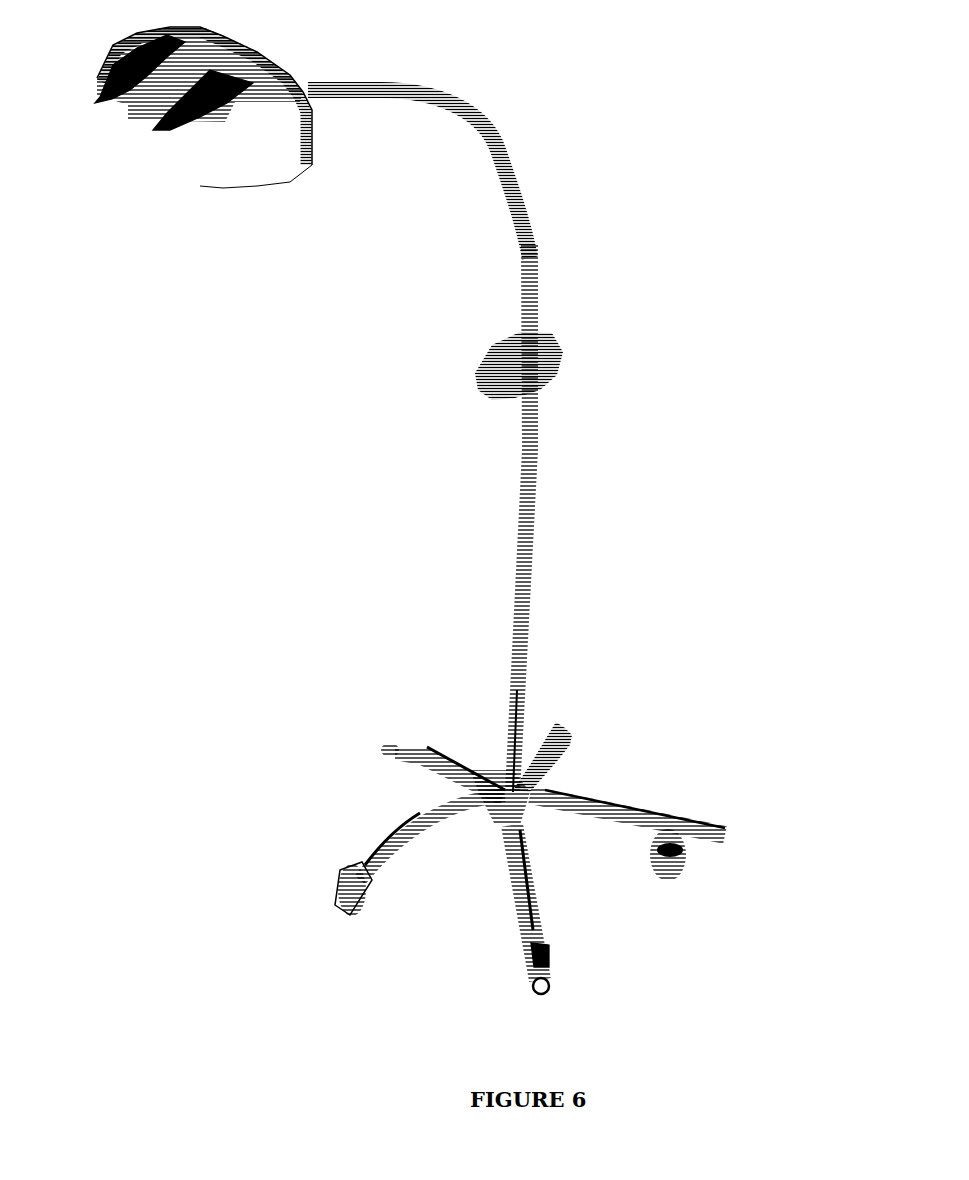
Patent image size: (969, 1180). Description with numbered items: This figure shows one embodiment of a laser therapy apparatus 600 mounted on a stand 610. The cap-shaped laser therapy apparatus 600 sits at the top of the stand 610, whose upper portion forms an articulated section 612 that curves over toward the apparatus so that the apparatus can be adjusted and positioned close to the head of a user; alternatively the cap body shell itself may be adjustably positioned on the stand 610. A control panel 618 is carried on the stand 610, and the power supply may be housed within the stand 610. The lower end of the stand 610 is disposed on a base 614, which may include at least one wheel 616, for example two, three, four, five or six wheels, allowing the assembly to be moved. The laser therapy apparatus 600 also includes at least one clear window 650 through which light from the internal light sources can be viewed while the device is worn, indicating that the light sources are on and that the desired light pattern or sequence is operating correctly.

The laser therapy apparatus 600 is at (205, 107).
The clear window 650 is at (140, 92).
The articulated section 612 is at (505, 143).
The stand 610 is at (537, 447).
The control panel 618 is at (557, 340).
The base 614 is at (428, 747).
The wheel 616 is at (570, 735).